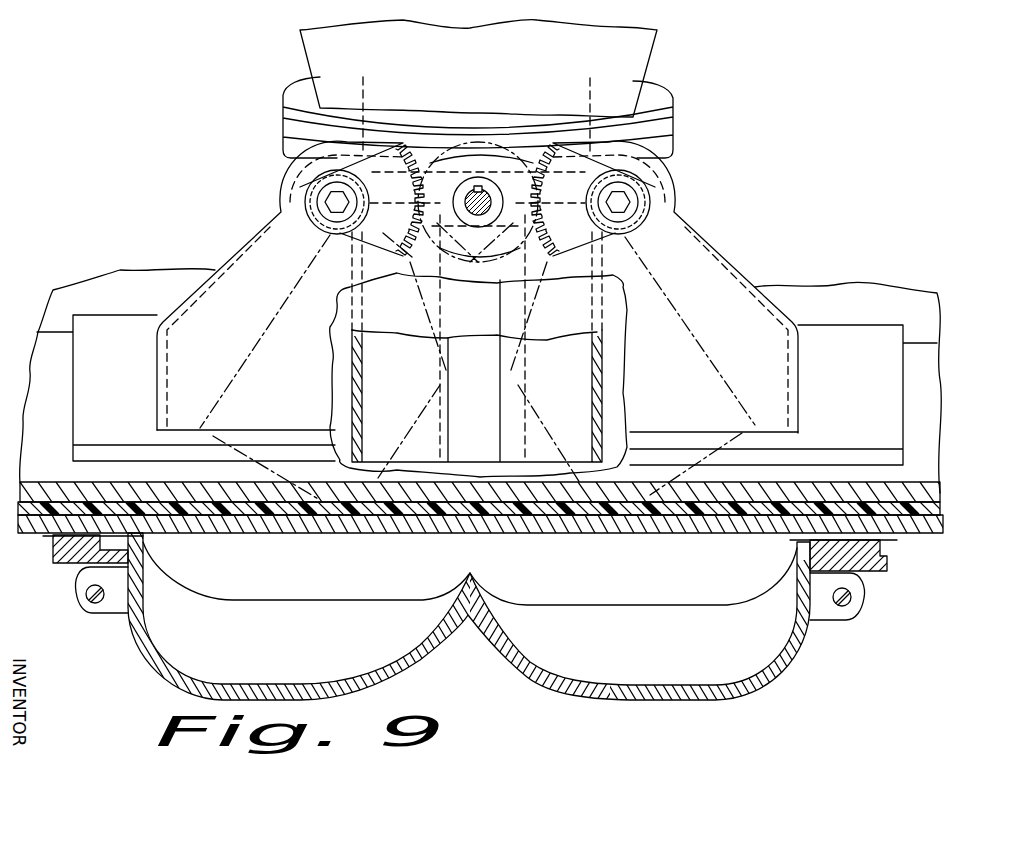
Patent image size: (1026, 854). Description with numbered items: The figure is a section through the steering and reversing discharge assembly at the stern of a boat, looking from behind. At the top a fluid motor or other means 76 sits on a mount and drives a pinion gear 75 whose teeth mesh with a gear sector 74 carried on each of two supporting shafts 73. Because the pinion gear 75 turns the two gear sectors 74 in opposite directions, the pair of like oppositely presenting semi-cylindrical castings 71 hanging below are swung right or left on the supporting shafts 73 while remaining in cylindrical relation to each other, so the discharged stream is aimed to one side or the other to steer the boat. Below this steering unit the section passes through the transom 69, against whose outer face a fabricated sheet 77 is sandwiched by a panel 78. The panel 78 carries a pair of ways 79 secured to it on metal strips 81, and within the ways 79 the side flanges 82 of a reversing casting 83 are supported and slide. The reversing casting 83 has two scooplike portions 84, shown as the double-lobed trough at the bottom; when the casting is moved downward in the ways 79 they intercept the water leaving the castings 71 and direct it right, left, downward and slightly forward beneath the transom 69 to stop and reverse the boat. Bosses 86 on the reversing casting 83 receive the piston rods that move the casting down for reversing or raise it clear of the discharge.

The transom 69 is at (937, 500).
The semi-cylindrical castings 71 is at (414, 388).
The supporting shafts 73 is at (333, 193).
The gear sector 74 is at (387, 147).
The pinion gear 75 is at (473, 150).
The fluid motor 76 is at (625, 49).
The fabricated sheet 77 is at (943, 520).
The panel 78 is at (917, 540).
The ways 79 is at (55, 547).
The metal strips 81 is at (143, 537).
The side flanges 82 is at (77, 562).
The reversing casting 83 is at (657, 700).
The scooplike portions 84 is at (332, 613).
The bosses 86 is at (104, 613).